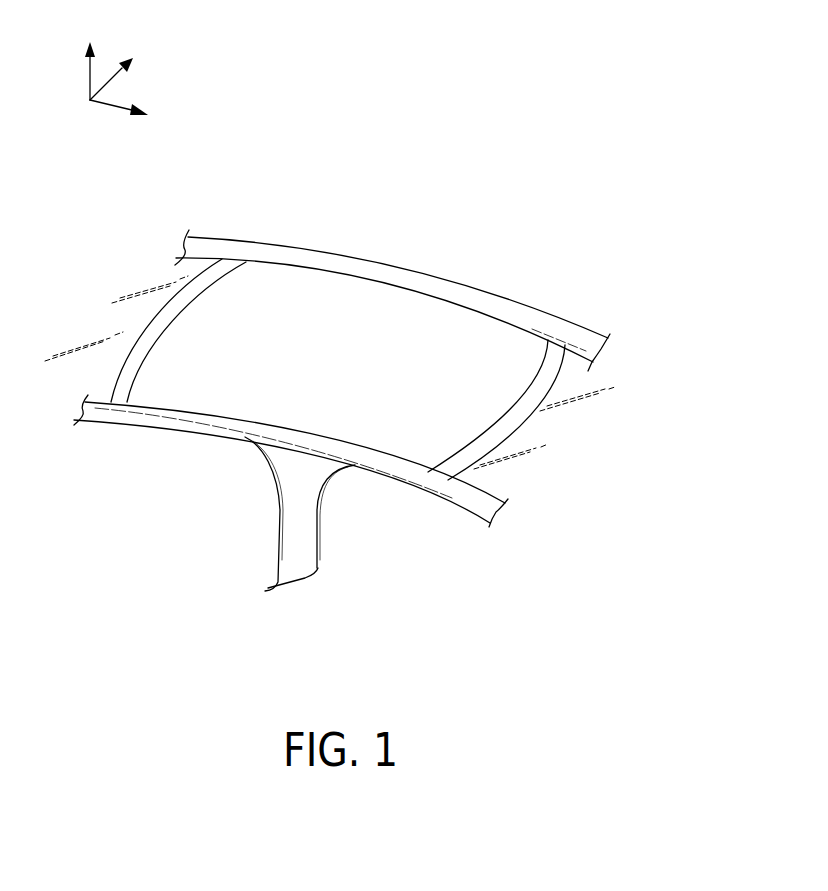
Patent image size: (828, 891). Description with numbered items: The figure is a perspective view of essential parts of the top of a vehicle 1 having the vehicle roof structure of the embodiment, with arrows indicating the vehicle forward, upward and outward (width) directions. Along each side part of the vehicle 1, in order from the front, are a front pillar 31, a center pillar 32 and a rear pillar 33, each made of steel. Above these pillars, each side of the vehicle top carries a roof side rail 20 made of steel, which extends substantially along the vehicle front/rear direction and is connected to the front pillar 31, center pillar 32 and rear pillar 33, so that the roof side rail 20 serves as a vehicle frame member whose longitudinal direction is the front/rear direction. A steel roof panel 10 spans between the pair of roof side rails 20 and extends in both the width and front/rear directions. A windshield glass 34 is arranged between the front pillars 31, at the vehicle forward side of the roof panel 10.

The vehicle 1 is at (485, 143).
The roof panel 10 is at (320, 310).
The roof side rail 20 is at (485, 297).
The front pillar 31 is at (597, 340).
The center pillar 32 is at (300, 535).
The rear pillar 33 is at (198, 250).
The windshield glass 34 is at (560, 431).